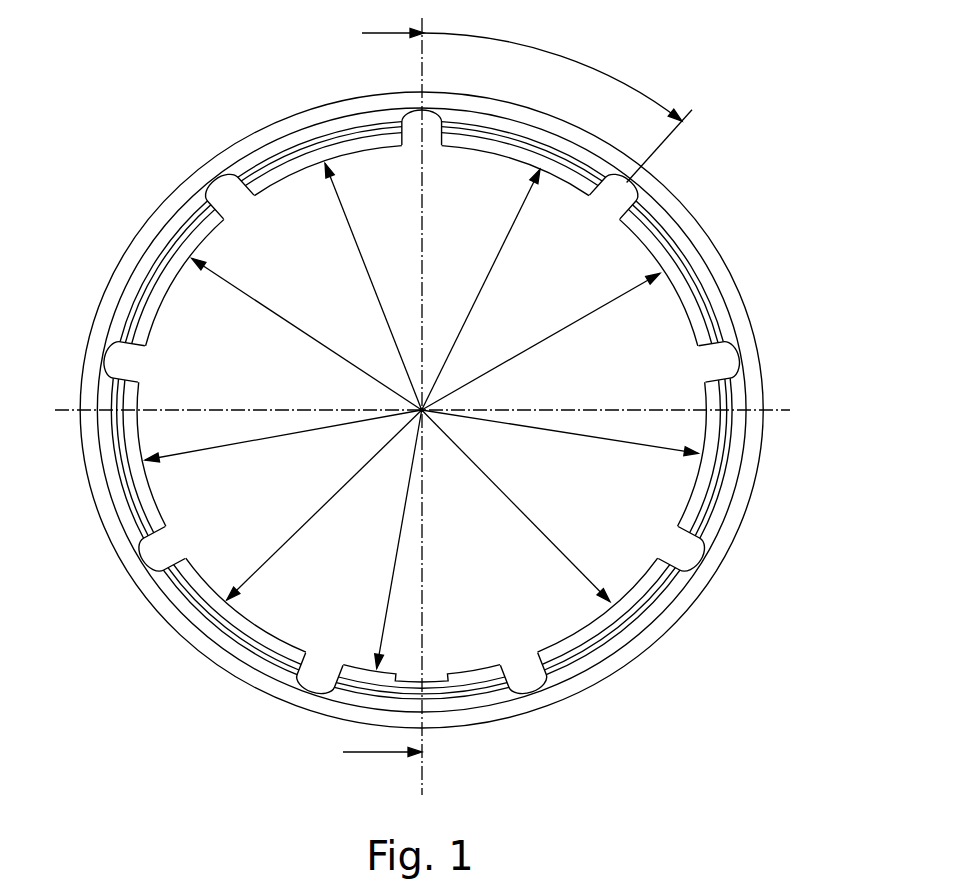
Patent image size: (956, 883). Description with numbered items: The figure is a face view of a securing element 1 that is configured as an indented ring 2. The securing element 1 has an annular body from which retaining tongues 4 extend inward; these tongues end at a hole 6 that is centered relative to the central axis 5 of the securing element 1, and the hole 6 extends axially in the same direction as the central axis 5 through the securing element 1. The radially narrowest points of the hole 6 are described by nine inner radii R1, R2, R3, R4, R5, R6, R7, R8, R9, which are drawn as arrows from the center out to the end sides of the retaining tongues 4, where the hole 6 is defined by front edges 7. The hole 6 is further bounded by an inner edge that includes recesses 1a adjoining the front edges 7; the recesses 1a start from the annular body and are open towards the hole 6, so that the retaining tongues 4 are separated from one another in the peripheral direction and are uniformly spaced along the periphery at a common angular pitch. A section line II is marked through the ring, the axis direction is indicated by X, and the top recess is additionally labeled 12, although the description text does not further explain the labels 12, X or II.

The securing element 1 is at (748, 80).
The recesses 1a is at (620, 185).
The indented ring 2 is at (670, 226).
The retaining tongues 4 is at (323, 143).
The central axis 5 is at (424, 414).
The hole 6 is at (680, 565).
The front edges 7 is at (380, 140).
The top slot 12 is at (433, 135).
The axis X is at (450, 650).
The section line II is at (383, 395).
The inner radius R1 is at (514, 222).
The inner radius R2 is at (347, 220).
The inner radius R3 is at (237, 287).
The inner radius R4 is at (205, 448).
The inner radius R5 is at (257, 570).
The inner radius R6 is at (383, 632).
The inner radius R7 is at (558, 549).
The inner radius R8 is at (623, 442).
The inner radius R9 is at (590, 314).